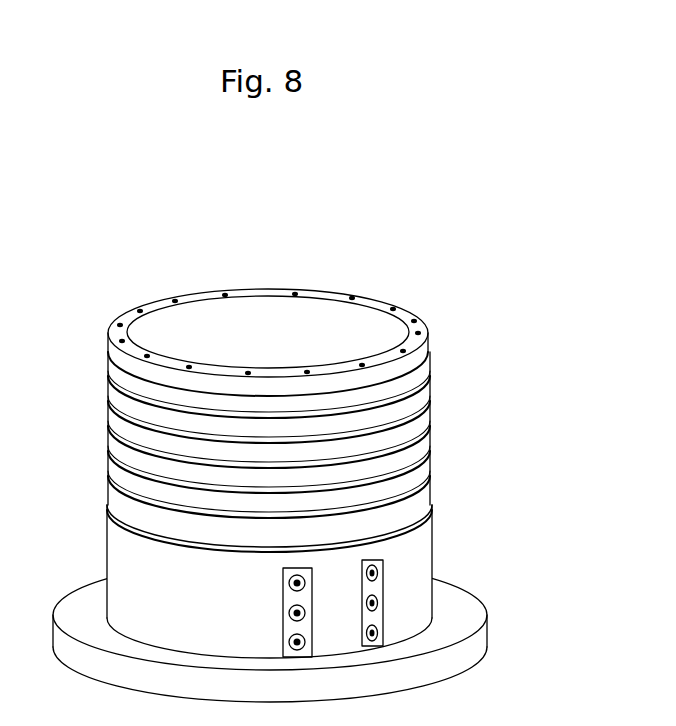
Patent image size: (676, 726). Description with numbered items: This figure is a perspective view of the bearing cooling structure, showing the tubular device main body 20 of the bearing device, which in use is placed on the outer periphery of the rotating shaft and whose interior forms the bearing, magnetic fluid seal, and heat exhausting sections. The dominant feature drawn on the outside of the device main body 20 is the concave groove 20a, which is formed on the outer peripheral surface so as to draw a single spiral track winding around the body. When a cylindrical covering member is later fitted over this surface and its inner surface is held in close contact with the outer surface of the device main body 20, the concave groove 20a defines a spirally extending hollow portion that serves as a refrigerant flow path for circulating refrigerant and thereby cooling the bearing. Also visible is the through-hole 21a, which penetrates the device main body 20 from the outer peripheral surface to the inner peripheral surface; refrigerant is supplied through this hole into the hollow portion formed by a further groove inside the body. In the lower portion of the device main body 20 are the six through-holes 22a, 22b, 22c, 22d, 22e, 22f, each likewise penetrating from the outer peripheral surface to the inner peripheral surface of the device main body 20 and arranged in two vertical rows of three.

The device main body 20 is at (311, 495).
The concave groove 20a is at (127, 489).
The through-hole 21a is at (128, 442).
The through-hole 22a is at (290, 641).
The through-hole 22b is at (290, 612).
The through-hole 22c is at (290, 583).
The through-hole 22d is at (380, 632).
The through-hole 22e is at (380, 603).
The through-hole 22f is at (380, 573).